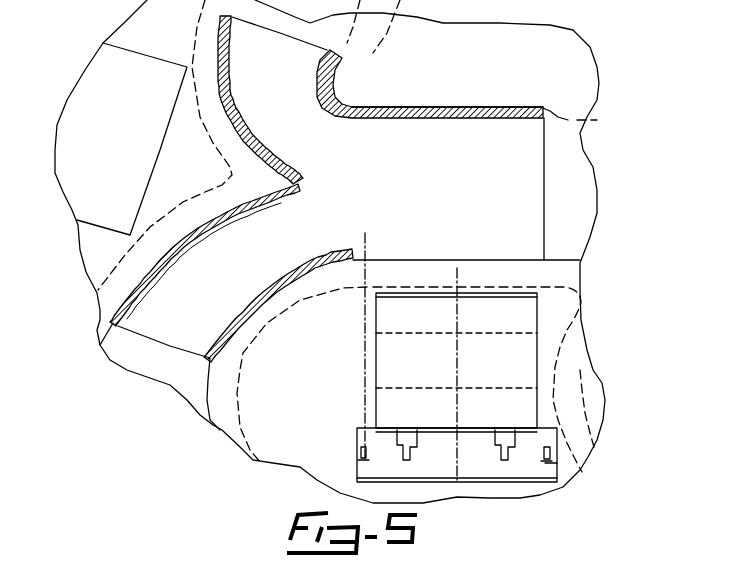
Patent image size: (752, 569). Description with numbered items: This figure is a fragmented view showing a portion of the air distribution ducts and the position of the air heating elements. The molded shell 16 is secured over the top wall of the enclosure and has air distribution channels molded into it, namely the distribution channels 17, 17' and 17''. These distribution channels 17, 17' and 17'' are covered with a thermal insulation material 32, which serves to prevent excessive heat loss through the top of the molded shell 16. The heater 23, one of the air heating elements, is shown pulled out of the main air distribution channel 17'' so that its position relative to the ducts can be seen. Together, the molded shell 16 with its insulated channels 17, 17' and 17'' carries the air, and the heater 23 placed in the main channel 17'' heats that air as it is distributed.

The molded shell 16 is at (303, 432).
The distribution channel 17 is at (278, 316).
The distribution channel 17' is at (457, 83).
The main air distribution channel 17'' is at (450, 77).
The heater 23 is at (520, 378).
The thermal insulation material 32 is at (230, 118).